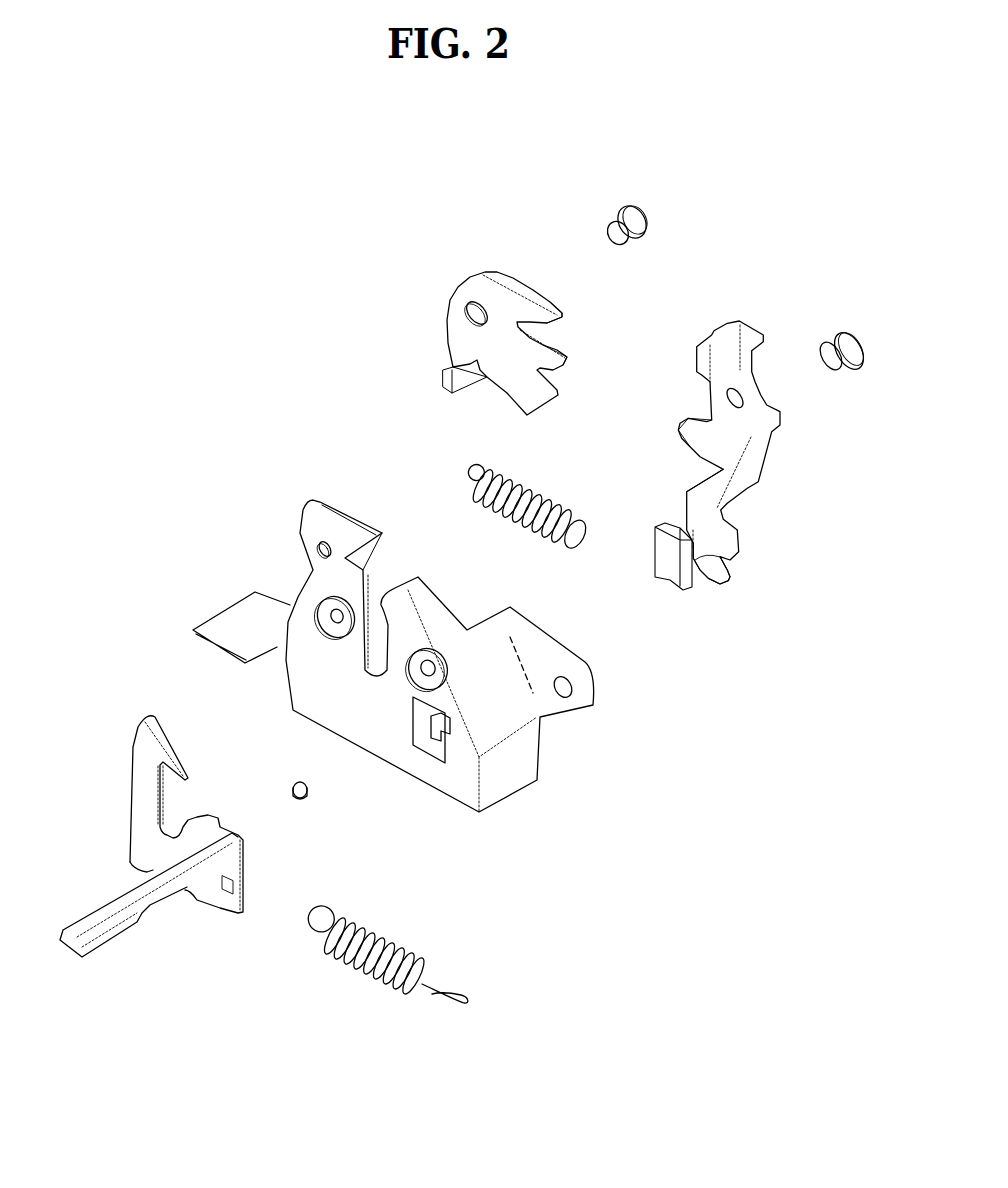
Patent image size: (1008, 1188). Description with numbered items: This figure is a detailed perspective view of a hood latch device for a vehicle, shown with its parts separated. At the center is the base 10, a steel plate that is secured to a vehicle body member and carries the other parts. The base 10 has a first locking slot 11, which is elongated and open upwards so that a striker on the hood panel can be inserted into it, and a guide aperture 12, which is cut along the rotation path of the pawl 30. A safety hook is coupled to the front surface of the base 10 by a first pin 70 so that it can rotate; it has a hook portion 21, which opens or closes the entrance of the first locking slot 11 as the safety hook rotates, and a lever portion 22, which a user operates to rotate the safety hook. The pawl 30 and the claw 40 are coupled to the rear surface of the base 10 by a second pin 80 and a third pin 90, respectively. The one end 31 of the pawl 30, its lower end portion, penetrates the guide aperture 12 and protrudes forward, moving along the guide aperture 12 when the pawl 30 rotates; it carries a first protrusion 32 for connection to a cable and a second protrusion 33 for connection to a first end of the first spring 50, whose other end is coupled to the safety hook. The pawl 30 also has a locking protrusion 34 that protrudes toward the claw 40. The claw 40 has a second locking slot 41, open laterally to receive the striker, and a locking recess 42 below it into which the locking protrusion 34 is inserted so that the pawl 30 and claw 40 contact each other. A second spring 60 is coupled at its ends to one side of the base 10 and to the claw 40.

The base 10 is at (525, 750).
The first locking slot 11 is at (388, 583).
The guide aperture 12 is at (447, 723).
The hook portion 21 is at (150, 750).
The lever portion 22 is at (108, 935).
The pawl 30 is at (767, 462).
The one end 31 is at (723, 513).
The first protrusion 32 is at (738, 556).
The second protrusion 33 is at (668, 575).
The locking protrusion 34 is at (678, 433).
The claw 40 is at (448, 296).
The second locking slot 41 is at (563, 327).
The locking recess 42 is at (562, 370).
The first spring 50 is at (353, 973).
The second spring 60 is at (475, 493).
The first pin 70 is at (295, 780).
The second pin 80 is at (836, 335).
The third pin 90 is at (648, 222).